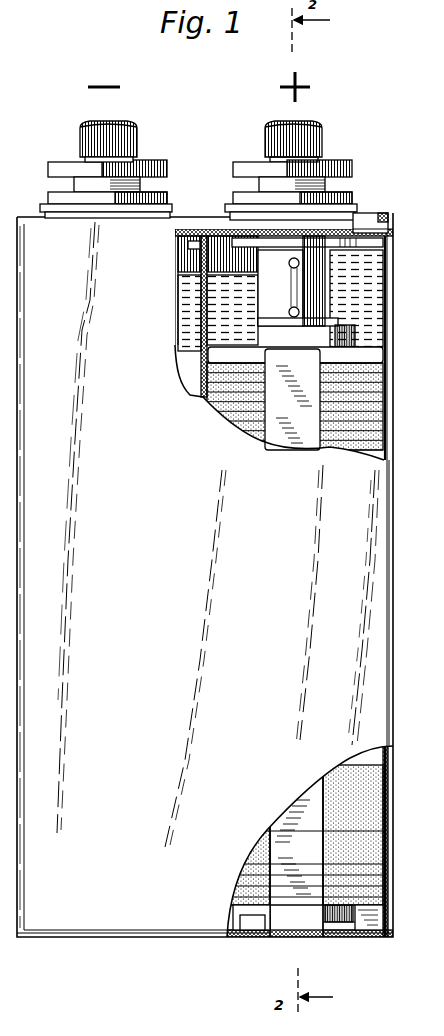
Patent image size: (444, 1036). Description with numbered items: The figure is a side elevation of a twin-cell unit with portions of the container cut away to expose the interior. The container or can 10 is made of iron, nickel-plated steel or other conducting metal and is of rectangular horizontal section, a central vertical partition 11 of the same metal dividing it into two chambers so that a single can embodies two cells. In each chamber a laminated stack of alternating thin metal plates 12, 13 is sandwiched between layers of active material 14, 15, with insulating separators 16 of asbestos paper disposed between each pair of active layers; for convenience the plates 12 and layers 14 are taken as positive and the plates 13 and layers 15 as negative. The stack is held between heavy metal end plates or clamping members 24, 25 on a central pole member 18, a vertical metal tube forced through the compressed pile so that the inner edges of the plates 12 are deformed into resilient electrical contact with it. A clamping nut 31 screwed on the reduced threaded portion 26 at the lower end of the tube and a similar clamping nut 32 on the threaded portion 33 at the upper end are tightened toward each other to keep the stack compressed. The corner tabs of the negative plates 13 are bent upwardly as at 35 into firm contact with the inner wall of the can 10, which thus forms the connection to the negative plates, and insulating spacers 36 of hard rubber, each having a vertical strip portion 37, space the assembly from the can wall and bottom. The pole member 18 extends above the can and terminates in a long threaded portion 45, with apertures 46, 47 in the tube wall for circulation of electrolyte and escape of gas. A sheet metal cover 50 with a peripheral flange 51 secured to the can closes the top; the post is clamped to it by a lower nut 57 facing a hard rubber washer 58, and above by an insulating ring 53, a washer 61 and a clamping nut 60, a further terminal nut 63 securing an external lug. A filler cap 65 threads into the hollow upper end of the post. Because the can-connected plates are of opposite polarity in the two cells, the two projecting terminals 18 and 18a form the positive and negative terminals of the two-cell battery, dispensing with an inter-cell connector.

The container 10 is at (362, 502).
The central vertical partition 11 is at (195, 242).
The positive plates 12 is at (383, 842).
The negative plates 13 is at (383, 807).
The positive active material layers 14 is at (387, 385).
The negative active material layers 15 is at (380, 402).
The insulating separators 16 is at (383, 790).
The central pole member 18 is at (327, 266).
The second projecting terminal 18a is at (66, 142).
The upper end clamping plate 24 is at (372, 352).
The lower end clamping plate 25 is at (368, 895).
The reduced threaded portion 26 is at (330, 922).
The lower clamping nut 31 is at (246, 915).
The upper clamping nut 32 is at (353, 332).
The upper threaded portion 33 is at (335, 320).
The upwardly bent tab portions 35 is at (383, 778).
The insulating spacers 36 is at (383, 826).
The vertical strip portion 37 is at (290, 880).
The exterior threaded portion 45 is at (118, 188).
The tube wall aperture 46 is at (300, 268).
The tube wall aperture 47 is at (300, 310).
The sheet metal cover 50 is at (388, 216).
The peripheral flange 51 is at (386, 224).
The insulating ring 53 is at (64, 216).
The lower nut 57 is at (355, 247).
The hard rubber washer 58 is at (390, 234).
The clamping nut 60 is at (48, 198).
The washer 61 is at (44, 208).
The terminal nut 63 is at (52, 167).
The filler cap 65 is at (112, 124).